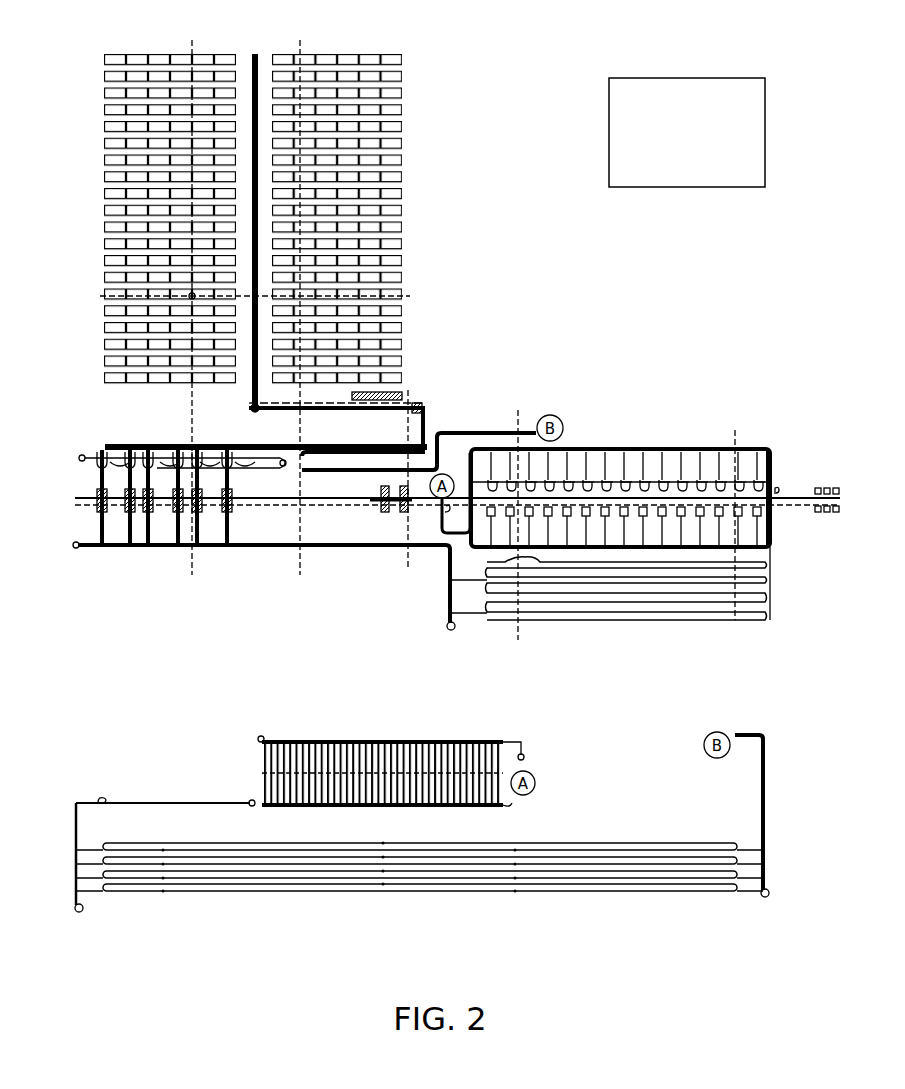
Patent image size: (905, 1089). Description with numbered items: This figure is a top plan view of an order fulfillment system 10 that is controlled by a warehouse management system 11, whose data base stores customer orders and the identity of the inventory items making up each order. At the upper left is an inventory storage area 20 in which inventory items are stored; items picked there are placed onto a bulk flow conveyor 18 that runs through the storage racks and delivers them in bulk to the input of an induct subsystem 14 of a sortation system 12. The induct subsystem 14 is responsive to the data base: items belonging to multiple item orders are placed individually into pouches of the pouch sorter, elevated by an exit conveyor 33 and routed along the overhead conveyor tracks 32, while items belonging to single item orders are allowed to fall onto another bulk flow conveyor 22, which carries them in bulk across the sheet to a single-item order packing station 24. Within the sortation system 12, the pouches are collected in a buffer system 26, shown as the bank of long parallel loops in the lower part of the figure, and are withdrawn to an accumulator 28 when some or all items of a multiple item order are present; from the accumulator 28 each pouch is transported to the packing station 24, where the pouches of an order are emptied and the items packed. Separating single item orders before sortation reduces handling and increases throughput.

The order fulfillment system 10 is at (487, 223).
The warehouse management system 11 is at (768, 124).
The sortation system 12 is at (382, 610).
The induct subsystem 14 is at (99, 505).
The bulk flow conveyor 18 is at (257, 62).
The inventory storage area 20 is at (102, 160).
The another bulk flow conveyor 22 is at (337, 502).
The packing station 24 is at (760, 480).
The buffer system 26 is at (591, 838).
The accumulator 28 is at (537, 747).
The tracks 32 is at (110, 548).
The exit conveyor 33 is at (100, 481).